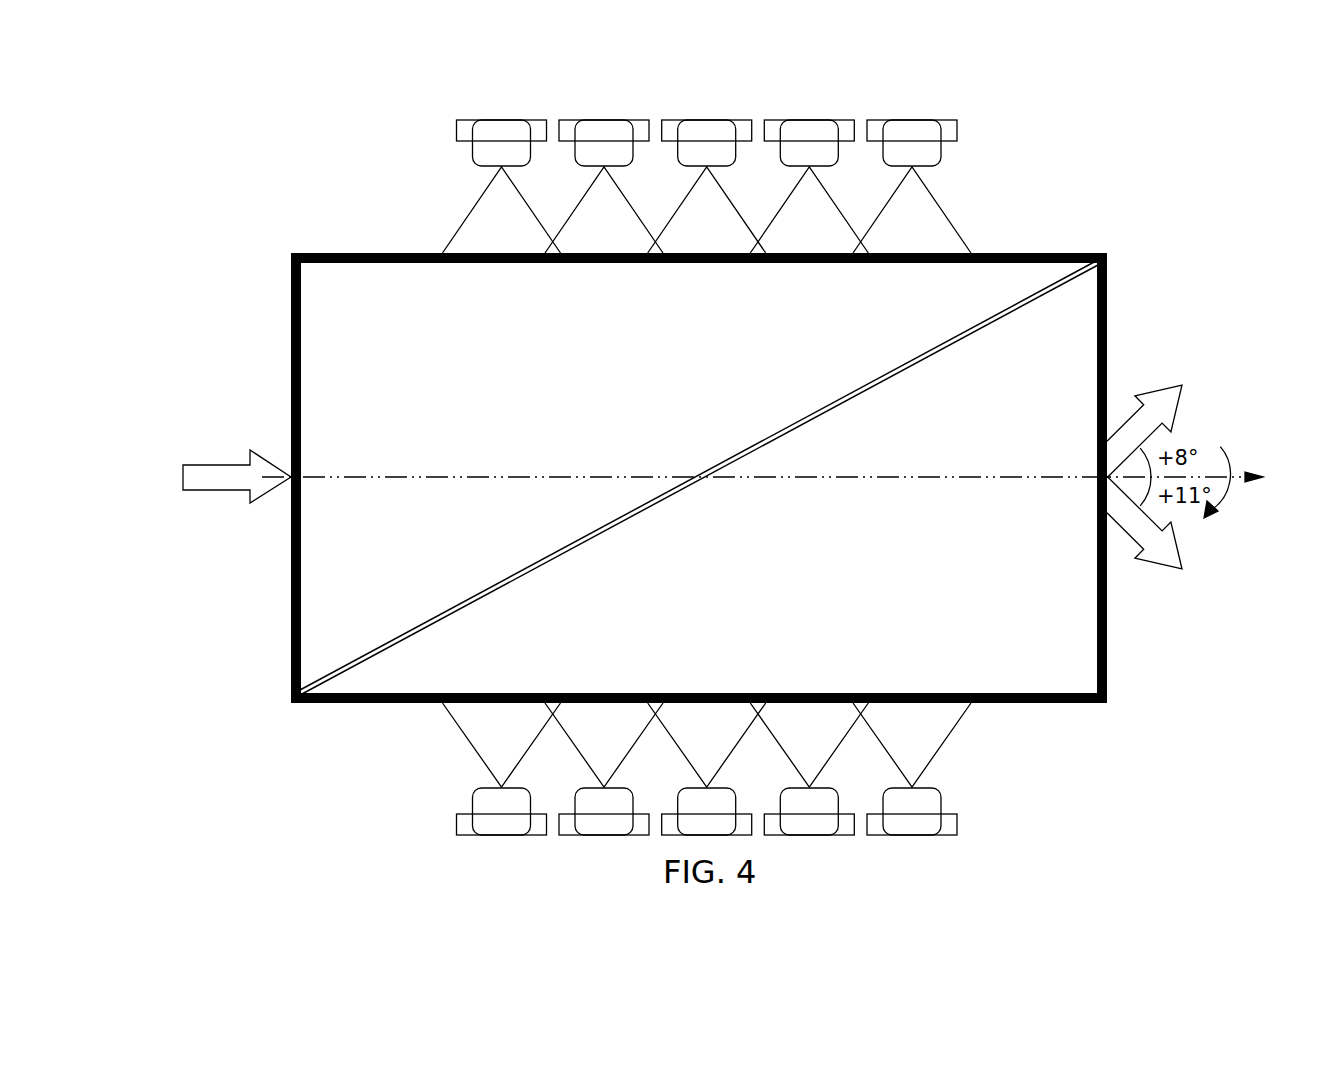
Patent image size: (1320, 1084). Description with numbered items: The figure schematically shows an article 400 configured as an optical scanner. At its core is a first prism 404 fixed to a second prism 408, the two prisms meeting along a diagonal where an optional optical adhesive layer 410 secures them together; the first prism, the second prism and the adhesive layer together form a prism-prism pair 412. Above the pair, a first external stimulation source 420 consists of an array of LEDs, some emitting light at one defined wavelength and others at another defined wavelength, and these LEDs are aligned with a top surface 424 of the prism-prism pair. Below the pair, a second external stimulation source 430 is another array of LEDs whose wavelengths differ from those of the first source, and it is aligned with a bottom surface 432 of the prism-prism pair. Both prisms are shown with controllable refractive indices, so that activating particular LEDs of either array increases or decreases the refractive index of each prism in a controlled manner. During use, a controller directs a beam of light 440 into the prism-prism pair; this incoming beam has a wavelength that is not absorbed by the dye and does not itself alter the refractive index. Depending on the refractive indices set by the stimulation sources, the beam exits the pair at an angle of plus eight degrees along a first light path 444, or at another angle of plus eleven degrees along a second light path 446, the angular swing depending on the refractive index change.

The article 400 is at (1134, 142).
The first prism 404 is at (410, 337).
The second prism 408 is at (1003, 638).
The optical adhesive layer 410 is at (897, 373).
The prism-prism pair 412 is at (291, 650).
The first external stimulation source 420 is at (438, 113).
The top surface 424 is at (343, 253).
The second external stimulation source 430 is at (438, 844).
The bottom surface 432 is at (337, 703).
The beam of light 440 is at (216, 464).
The first light path 444 is at (1166, 386).
The second light path 446 is at (1166, 570).